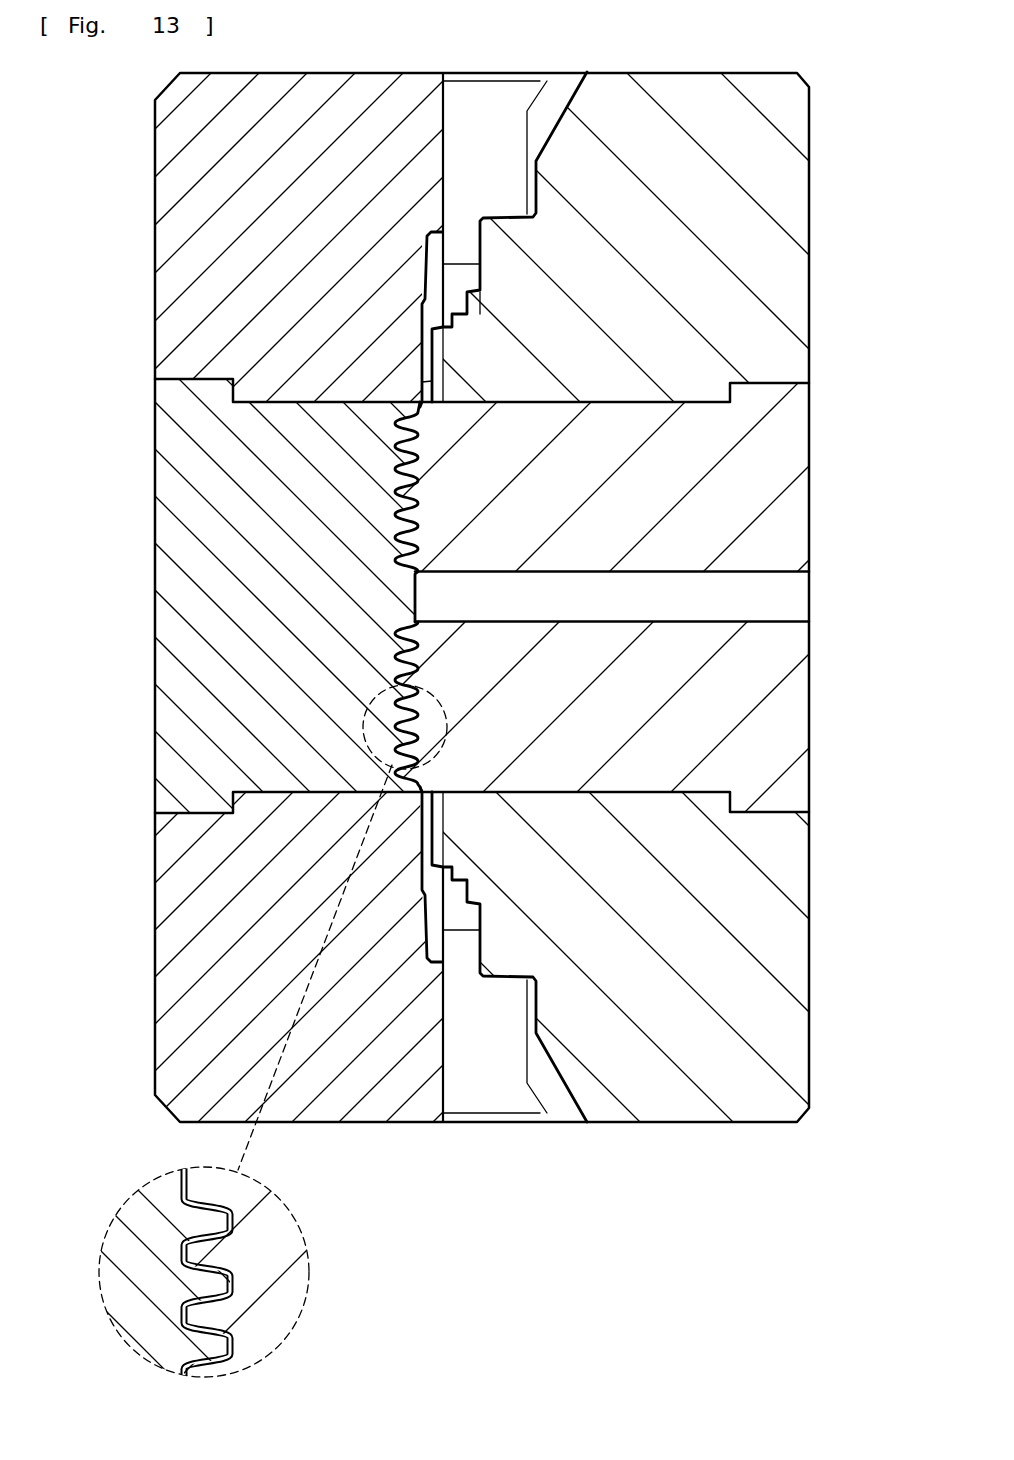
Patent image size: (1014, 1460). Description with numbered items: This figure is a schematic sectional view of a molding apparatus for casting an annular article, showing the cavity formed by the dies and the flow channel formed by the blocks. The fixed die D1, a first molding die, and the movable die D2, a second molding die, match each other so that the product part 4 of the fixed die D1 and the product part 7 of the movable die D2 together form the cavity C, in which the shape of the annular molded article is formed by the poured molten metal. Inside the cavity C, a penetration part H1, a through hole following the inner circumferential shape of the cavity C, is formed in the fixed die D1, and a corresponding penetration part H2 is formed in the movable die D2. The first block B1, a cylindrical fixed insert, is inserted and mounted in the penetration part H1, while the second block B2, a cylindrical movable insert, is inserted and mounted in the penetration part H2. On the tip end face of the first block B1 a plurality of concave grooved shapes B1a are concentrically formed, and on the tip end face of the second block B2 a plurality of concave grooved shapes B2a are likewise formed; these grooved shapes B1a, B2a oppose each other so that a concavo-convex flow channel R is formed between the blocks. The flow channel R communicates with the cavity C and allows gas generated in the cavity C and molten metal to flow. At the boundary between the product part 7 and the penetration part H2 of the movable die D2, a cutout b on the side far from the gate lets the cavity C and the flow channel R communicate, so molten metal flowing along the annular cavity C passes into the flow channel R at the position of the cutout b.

The fixed die D1 is at (150, 155).
The movable die D2 is at (815, 235).
The product part 4 is at (478, 254).
The product part 7 is at (482, 308).
The cutout b is at (415, 388).
The flow channel R is at (393, 452).
The first block B1 is at (178, 515).
The second block B2 is at (800, 513).
The penetration part H1 is at (273, 787).
The penetration part H2 is at (718, 788).
The cavity C is at (472, 194).
The grooved shapes B1a is at (198, 1320).
The grooved shapes B2a is at (215, 1220).